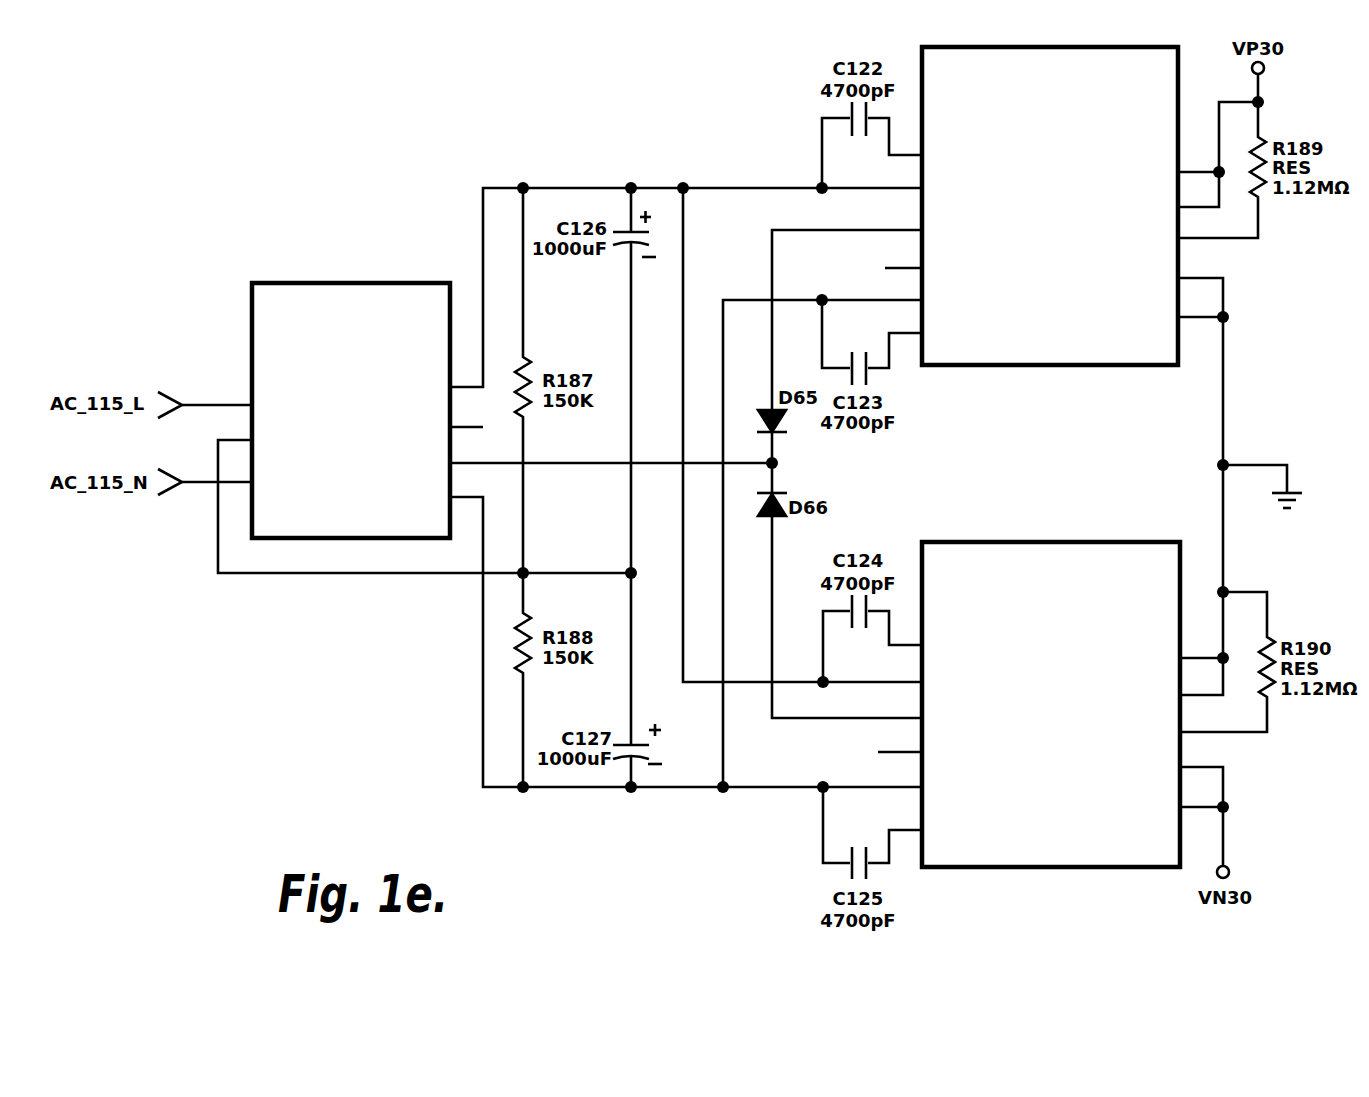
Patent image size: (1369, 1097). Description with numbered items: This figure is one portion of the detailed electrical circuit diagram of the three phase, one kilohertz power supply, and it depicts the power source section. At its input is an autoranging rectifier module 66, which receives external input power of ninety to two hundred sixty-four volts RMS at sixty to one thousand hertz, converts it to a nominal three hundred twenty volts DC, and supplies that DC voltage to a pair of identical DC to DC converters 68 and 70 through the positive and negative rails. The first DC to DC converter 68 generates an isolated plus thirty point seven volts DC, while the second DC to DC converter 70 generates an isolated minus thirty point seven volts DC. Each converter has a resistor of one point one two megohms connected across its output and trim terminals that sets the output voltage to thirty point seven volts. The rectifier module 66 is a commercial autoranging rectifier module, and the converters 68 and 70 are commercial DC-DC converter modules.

The autoranging rectifier module 66 is at (340, 283).
The DC to DC converter 68 is at (1017, 365).
The DC to DC converter 70 is at (1047, 542).